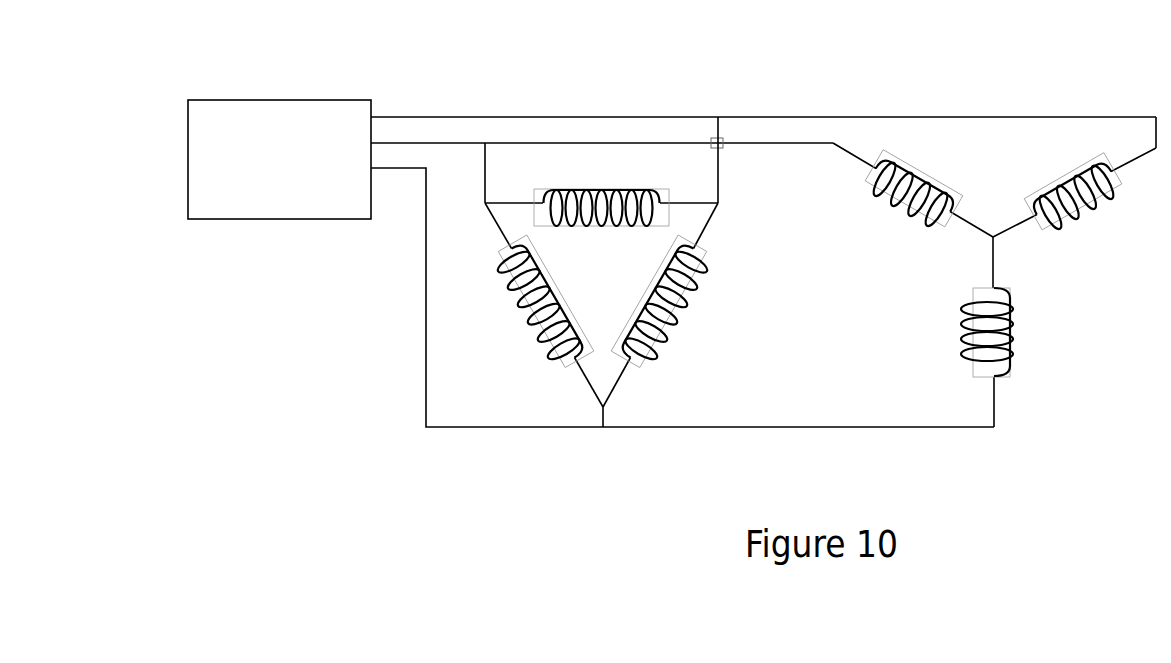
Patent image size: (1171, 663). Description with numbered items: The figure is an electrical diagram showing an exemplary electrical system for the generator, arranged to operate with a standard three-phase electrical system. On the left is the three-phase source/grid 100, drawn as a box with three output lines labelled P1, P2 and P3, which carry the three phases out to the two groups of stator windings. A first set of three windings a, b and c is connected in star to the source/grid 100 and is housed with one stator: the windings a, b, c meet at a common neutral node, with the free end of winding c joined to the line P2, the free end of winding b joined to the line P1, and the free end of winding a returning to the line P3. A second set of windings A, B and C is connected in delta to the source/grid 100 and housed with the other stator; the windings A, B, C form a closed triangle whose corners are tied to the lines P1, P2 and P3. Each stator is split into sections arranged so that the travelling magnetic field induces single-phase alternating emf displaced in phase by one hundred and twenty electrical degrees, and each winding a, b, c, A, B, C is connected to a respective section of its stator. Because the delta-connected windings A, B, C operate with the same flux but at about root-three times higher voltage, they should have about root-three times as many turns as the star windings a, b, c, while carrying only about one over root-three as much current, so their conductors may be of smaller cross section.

The source/grid 100 is at (288, 100).
The phase terminal P1 is at (763, 120).
The phase terminal P2 is at (602, 134).
The phase terminal P3 is at (682, 286).
The delta-connected winding A is at (601, 192).
The delta-connected winding B is at (660, 305).
The delta-connected winding C is at (544, 305).
The star-connected winding a is at (980, 332).
The star-connected winding b is at (1074, 193).
The star-connected winding c is at (913, 190).